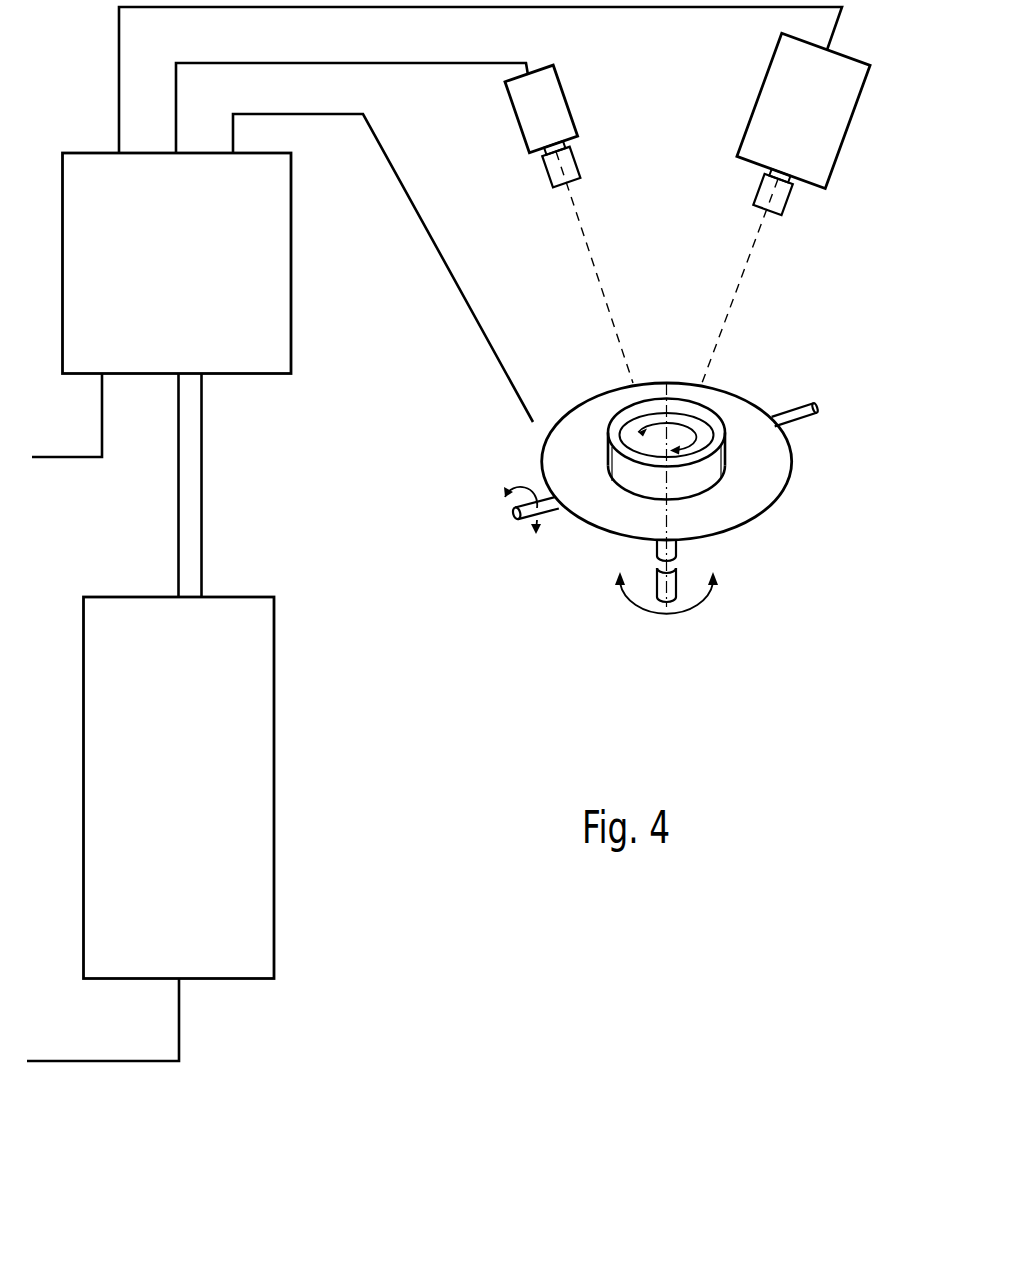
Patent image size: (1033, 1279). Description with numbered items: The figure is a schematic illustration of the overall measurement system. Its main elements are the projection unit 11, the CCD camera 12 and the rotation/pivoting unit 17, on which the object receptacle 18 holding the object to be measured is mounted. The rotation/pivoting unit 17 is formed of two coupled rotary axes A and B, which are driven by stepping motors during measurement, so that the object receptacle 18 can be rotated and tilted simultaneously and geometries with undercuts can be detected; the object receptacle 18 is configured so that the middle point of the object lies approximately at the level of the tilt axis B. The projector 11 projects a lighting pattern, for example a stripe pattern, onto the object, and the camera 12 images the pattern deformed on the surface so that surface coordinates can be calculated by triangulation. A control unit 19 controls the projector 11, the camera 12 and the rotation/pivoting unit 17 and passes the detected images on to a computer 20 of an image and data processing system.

The projection unit 11 is at (852, 128).
The CCD camera 12 is at (570, 102).
The rotation/pivoting unit 17 is at (608, 532).
The object receptacle 18 is at (706, 418).
The control unit 19 is at (190, 270).
The computer 20 is at (195, 801).
The rotary axis A is at (675, 582).
The tilt axis B is at (512, 511).